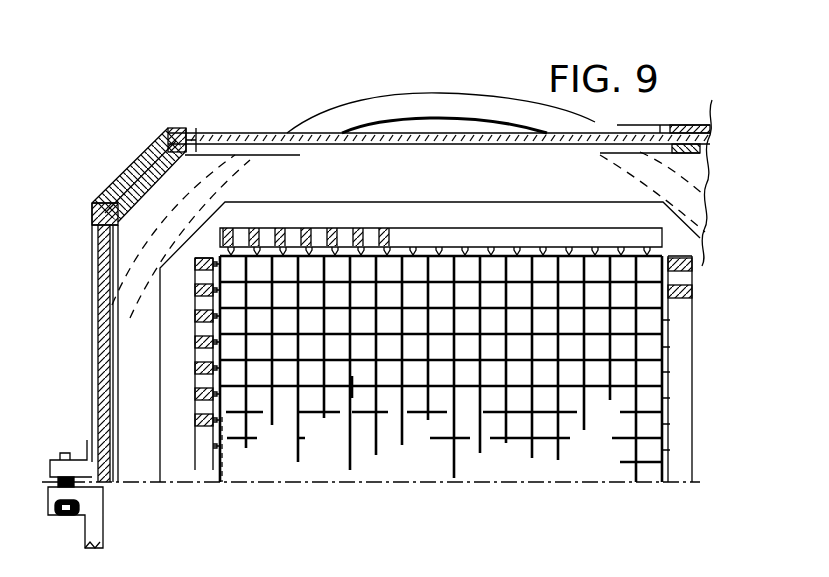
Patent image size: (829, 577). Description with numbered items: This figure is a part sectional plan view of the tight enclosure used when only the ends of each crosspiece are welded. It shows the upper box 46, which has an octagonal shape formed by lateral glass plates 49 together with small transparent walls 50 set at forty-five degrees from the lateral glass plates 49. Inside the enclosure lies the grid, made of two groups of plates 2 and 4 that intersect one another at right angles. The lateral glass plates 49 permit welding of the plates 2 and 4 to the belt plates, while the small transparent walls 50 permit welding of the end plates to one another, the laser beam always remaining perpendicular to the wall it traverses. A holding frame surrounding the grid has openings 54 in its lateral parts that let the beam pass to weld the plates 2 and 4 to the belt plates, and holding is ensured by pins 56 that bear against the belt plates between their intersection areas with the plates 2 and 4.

The plate 2 is at (262, 402).
The plate 4 is at (360, 398).
The upper box 46 is at (86, 221).
The lateral glass plates 49 is at (306, 140).
The small transparent walls 50 is at (134, 172).
The openings 54 is at (340, 228).
The pins 56 is at (575, 252).